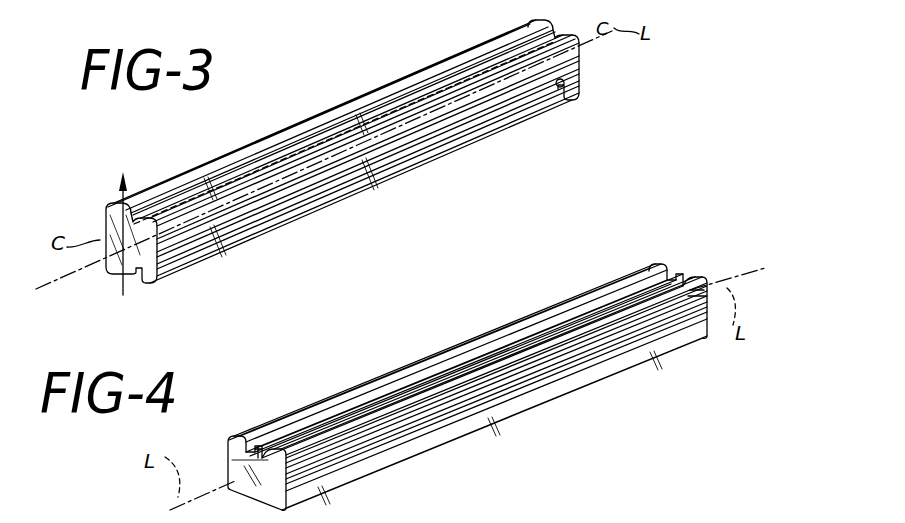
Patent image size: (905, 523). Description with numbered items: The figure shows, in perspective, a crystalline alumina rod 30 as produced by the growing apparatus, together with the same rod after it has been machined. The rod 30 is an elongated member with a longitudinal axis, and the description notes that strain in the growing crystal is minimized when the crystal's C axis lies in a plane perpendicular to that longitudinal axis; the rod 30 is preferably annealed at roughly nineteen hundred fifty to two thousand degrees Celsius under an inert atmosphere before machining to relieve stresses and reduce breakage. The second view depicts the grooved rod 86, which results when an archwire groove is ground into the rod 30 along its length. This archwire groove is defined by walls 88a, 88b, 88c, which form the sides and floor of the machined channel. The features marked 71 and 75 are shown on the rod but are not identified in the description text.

In FIG. 3, the rod 30 is at (389, 68).
In FIG. 3, the end face of rail member 71 is at (104, 215).
In FIG. 3, the longitudinal channel 75 is at (503, 97).
In FIG. 4, the grooved rod 86 is at (396, 358).
In FIG. 4, the wall 88a is at (533, 338).
In FIG. 4, the wall 88b is at (681, 272).
In FIG. 4, the wall 88c is at (259, 450).